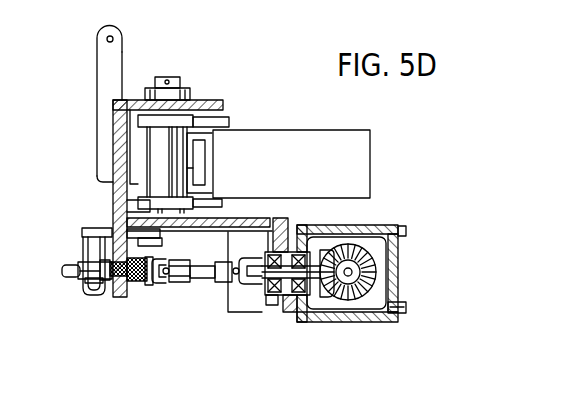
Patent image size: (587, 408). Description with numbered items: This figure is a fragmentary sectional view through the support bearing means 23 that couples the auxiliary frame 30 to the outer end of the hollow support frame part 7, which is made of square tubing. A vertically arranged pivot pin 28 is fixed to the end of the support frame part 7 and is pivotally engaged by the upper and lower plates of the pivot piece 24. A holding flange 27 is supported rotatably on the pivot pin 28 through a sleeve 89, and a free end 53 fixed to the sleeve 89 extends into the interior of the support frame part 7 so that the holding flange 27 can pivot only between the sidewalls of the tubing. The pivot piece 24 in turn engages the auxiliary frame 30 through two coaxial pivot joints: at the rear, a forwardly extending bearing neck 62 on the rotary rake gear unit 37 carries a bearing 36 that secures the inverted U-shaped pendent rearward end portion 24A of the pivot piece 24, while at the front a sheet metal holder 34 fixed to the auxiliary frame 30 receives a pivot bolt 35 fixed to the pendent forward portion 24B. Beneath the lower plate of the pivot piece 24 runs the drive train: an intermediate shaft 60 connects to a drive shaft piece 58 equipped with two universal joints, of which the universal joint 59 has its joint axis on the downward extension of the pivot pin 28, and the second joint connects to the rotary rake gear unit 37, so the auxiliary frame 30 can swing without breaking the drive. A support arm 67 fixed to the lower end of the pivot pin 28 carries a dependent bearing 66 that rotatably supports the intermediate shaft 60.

The support bearing means 23 is at (91, 104).
The holding flange 27 is at (124, 52).
The pivot pin 28 is at (156, 77).
The pivot piece 24 is at (194, 109).
The sleeve 89 is at (195, 157).
The free end 53 is at (193, 170).
The support frame part 7 is at (343, 130).
The support arm 67 is at (100, 233).
The intermediate shaft 60 is at (62, 272).
The bearing 66 is at (79, 286).
The pendent forward portion 24B is at (109, 292).
The sheet metal holder 34 is at (135, 287).
The pivot bolt 35 is at (145, 289).
The universal joint 59 is at (173, 292).
The drive shaft piece 58 is at (210, 282).
The pendent rearward end portion 24A is at (212, 300).
The bearing 36 is at (285, 298).
The bearing neck 62 is at (292, 313).
The rotary rake gear unit 37 is at (345, 324).
The auxiliary frame 30 is at (408, 323).